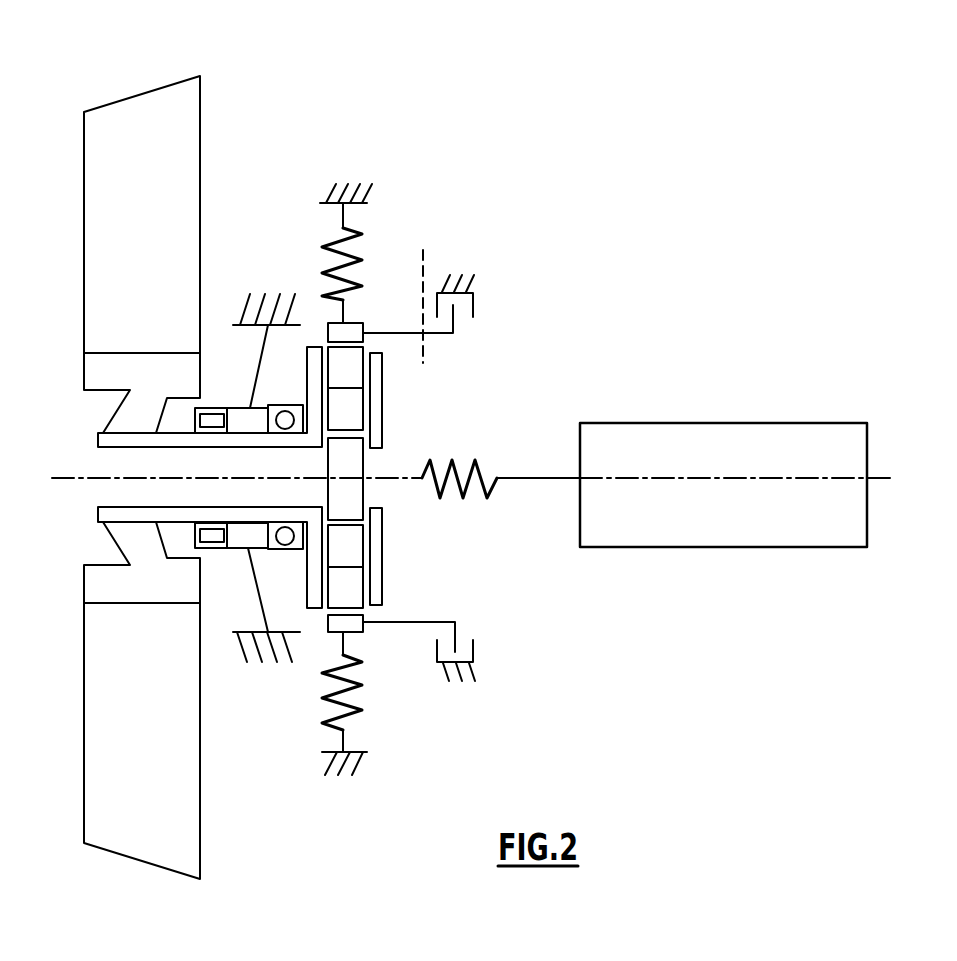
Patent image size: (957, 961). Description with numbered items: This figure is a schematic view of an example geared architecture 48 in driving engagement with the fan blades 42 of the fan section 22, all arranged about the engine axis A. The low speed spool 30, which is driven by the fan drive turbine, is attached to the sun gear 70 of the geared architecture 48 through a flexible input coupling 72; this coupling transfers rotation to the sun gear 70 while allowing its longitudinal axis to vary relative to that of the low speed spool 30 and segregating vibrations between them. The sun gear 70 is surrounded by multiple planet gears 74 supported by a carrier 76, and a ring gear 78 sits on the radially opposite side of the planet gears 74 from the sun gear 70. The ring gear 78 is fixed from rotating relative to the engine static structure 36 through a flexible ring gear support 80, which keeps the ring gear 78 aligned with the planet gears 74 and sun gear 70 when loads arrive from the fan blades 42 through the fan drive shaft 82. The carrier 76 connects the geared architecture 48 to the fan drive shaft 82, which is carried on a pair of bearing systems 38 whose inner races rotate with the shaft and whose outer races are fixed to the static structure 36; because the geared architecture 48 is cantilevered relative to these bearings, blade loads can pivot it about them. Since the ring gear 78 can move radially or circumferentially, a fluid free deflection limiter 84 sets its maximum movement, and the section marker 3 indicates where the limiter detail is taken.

The fan section 22 is at (127, 442).
The fan blades 42 is at (157, 243).
The fan drive shaft 82 is at (98, 441).
The bearing systems 38 is at (282, 406).
The engine static structure 36 is at (368, 196).
The flexible ring gear support 80 is at (357, 237).
The geared architecture 48 is at (292, 700).
The ring gear 78 is at (368, 322).
The planet gears 74 is at (354, 368).
The sun gear 70 is at (372, 492).
The carrier 76 is at (384, 570).
The flexible input coupling 72 is at (468, 492).
The low speed spool 30 is at (677, 549).
The deflection limiter 84 is at (494, 272).
The section line for FIG. 3 is at (423, 250).
The engine axis A is at (75, 480).